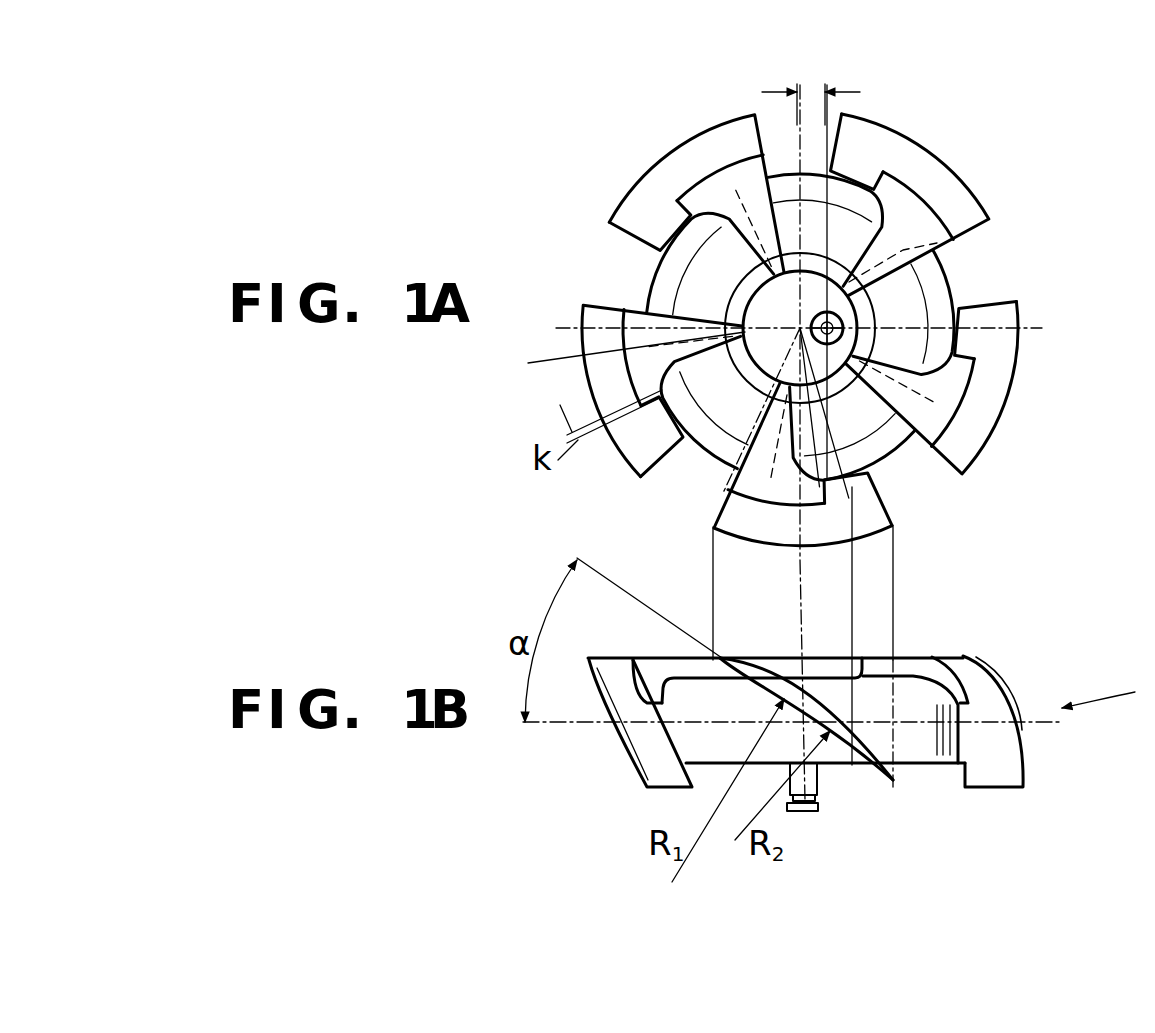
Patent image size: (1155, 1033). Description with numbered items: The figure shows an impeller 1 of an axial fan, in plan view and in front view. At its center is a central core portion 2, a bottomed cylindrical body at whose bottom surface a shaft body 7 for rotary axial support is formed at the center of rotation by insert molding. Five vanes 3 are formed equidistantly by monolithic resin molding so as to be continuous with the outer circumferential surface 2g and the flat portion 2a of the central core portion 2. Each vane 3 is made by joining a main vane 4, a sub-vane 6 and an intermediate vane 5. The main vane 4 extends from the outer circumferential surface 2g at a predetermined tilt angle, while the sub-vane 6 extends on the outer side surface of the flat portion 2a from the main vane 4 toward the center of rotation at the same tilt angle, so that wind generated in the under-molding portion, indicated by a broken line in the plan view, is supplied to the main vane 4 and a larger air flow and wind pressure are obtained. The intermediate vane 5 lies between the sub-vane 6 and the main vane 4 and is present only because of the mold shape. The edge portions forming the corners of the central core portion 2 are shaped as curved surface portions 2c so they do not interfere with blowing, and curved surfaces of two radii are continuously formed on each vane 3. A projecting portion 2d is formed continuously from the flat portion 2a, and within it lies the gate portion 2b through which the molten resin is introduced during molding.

In FIG. 1A, the impeller 1 is at (1024, 262).
In FIG. 1A, the central core portion 2 is at (866, 420).
In FIG. 1B, the central core portion 2 is at (922, 748).
In FIG. 1A, the flat portion 2a is at (868, 425).
In FIG. 1B, the flat portion 2a is at (830, 675).
In FIG. 1A, the gate portion 2b is at (872, 318).
In FIG. 1A, the curved surface portions 2c is at (945, 342).
In FIG. 1B, the curved surface portions 2c is at (985, 665).
In FIG. 1A, the projecting portion 2d is at (760, 305).
In FIG. 1A, the outer circumferential surface 2g is at (880, 440).
In FIG. 1B, the outer circumferential surface 2g is at (972, 745).
In FIG. 1A, the vanes 3 is at (675, 142).
In FIG. 1B, the vanes 3 is at (1025, 763).
In FIG. 1A, the main vane 4 is at (940, 181).
In FIG. 1A, the intermediate vane 5 is at (935, 222).
In FIG. 1A, the sub-vane 6 is at (937, 243).
In FIG. 1B, the sub-vane 6 is at (682, 678).
In FIG. 1B, the shaft body 7 is at (817, 792).